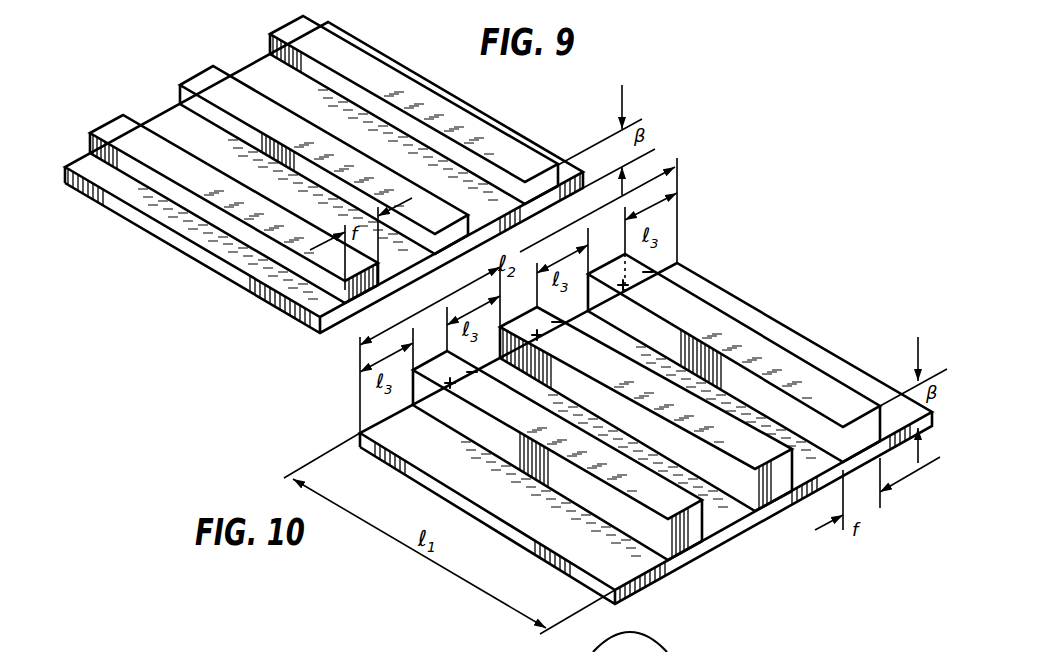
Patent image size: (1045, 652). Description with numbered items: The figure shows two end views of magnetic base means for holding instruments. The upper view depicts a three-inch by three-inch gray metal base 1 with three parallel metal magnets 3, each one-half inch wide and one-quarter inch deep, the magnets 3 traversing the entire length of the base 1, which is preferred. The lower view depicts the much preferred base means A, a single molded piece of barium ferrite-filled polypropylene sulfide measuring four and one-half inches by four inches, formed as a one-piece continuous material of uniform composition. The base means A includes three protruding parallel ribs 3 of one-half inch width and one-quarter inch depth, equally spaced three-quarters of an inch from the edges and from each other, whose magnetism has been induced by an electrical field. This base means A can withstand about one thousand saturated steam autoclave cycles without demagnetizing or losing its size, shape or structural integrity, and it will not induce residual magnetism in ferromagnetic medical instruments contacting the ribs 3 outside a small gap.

In FIG. 9, the base 1 is at (247, 257).
In FIG. 10, the base 1 is at (761, 319).
In FIG. 9, the magnets 3 is at (517, 166).
In FIG. 10, the magnets 3 is at (820, 413).
In FIG. 9, the base means A is at (433, 70).
In FIG. 10, the base means A is at (830, 331).